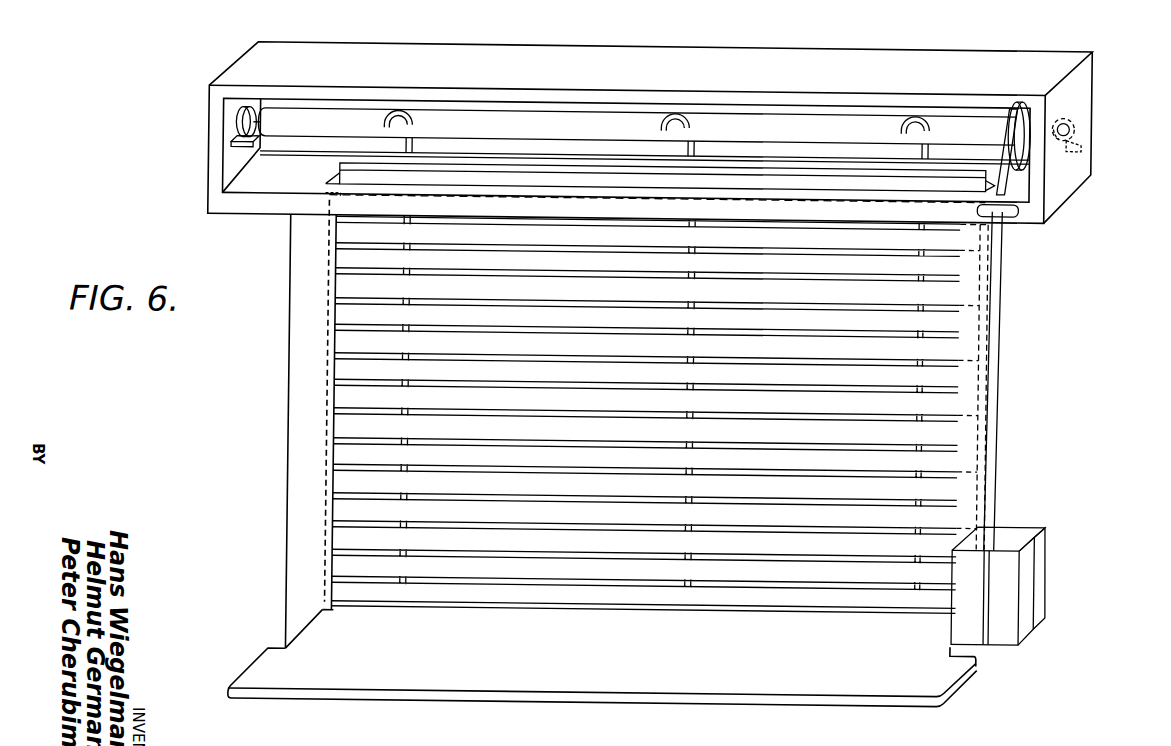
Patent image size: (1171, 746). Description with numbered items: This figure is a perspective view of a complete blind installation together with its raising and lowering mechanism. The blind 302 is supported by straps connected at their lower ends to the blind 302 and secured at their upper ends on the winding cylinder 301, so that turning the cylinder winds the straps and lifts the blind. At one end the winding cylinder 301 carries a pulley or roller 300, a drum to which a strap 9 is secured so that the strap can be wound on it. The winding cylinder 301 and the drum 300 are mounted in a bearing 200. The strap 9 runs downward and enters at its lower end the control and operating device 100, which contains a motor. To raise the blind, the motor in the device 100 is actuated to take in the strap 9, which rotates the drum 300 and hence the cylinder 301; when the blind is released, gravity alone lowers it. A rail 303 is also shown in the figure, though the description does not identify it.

The strap 9 is at (997, 340).
The control and operating device 100 is at (1010, 580).
The bearing 200 is at (236, 127).
The pulley or roller 300 is at (1026, 152).
The winding cylinder 301 is at (513, 122).
The blind 302 is at (763, 615).
The support rail 303 is at (692, 156).